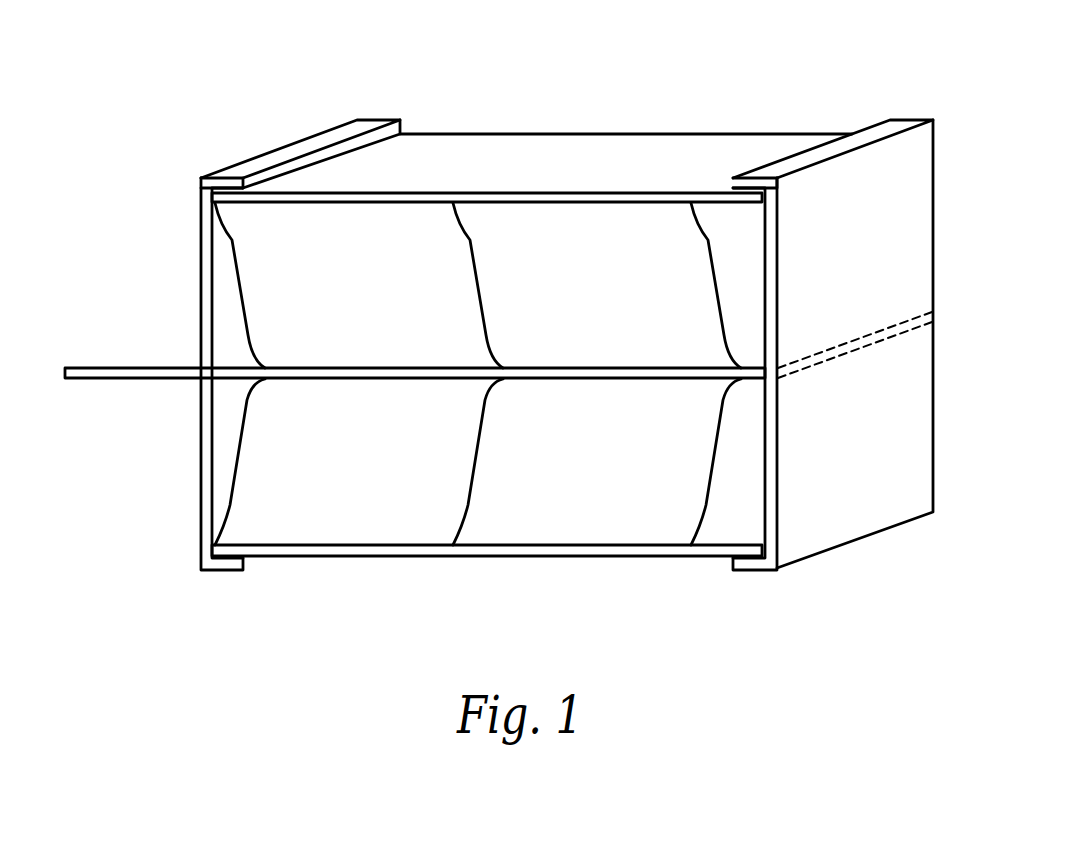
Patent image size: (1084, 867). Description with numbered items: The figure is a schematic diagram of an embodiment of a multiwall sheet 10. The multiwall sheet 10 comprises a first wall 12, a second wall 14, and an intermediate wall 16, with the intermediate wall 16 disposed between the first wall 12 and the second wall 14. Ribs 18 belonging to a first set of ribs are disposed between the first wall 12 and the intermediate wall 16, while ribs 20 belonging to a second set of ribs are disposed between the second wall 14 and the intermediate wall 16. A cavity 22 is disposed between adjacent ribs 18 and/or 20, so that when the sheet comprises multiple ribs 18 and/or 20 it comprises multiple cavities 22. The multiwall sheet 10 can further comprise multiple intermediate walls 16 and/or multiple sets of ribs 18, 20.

The multiwall sheet 10 is at (757, 78).
The first wall 12 is at (518, 197).
The second wall 14 is at (398, 556).
The intermediate wall 16 is at (565, 373).
The ribs 18 is at (244, 292).
The ribs 20 is at (245, 449).
The cavity 22 is at (587, 447).